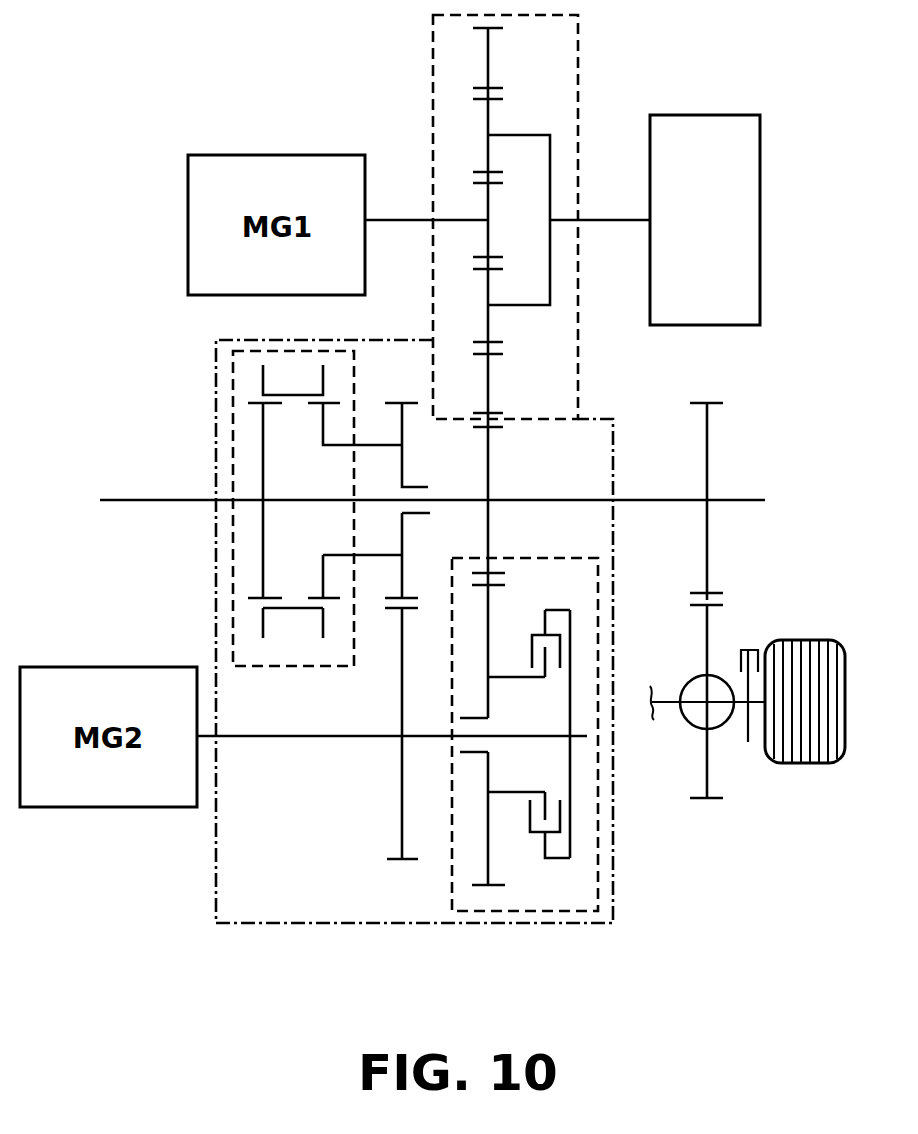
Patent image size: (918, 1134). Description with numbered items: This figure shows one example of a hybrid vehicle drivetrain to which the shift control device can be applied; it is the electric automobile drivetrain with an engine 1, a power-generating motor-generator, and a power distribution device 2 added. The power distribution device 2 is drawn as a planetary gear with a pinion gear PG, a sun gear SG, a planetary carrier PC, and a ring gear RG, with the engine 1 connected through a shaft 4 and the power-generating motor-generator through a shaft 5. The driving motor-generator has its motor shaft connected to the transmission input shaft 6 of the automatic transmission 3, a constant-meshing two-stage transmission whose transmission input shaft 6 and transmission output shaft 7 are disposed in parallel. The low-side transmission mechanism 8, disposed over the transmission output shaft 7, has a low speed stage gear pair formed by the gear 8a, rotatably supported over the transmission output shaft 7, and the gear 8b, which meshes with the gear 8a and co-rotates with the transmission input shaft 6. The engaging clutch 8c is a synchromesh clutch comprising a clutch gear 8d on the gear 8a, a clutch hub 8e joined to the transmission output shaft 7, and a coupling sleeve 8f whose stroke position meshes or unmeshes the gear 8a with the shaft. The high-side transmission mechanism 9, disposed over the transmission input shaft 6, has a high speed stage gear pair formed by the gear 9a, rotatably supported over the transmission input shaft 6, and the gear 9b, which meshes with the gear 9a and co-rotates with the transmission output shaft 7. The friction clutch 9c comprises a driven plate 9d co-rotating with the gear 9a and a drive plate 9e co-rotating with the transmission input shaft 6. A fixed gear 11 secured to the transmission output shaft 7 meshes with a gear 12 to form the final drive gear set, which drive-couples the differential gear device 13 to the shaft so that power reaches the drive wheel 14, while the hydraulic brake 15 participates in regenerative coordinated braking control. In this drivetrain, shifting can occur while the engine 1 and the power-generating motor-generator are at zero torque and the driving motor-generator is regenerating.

The engine 1 is at (740, 115).
The power distribution device 2 is at (579, 42).
The automatic transmission 3 is at (216, 872).
The engine output shaft 4 is at (605, 218).
The first motor generator shaft 5 is at (403, 222).
The transmission input shaft 6 is at (258, 738).
The transmission output shaft 7 is at (745, 500).
The low-side transmission mechanism 8 is at (281, 651).
The gear 8a is at (402, 598).
The gear 8b is at (397, 862).
The engaging clutch 8c is at (257, 389).
The clutch gear 8d is at (323, 428).
The clutch hub 8e is at (263, 428).
The coupling sleeve 8f is at (263, 375).
The high-side transmission mechanism 9 is at (568, 753).
The gear 9a is at (490, 888).
The gear 9b is at (497, 573).
The friction clutch 9c is at (530, 631).
The driven plate 9d is at (575, 678).
The drive plate 9e is at (560, 618).
The fixed gear 11 is at (713, 401).
The gear 12 is at (707, 800).
The differential gear device 13 is at (684, 719).
The drive wheel 14 is at (818, 640).
The hydraulic brake 15 is at (746, 650).
The pinion gear PG is at (488, 115).
The sun gear SG is at (488, 198).
The planetary carrier PC is at (540, 135).
The ring gear RG is at (494, 413).